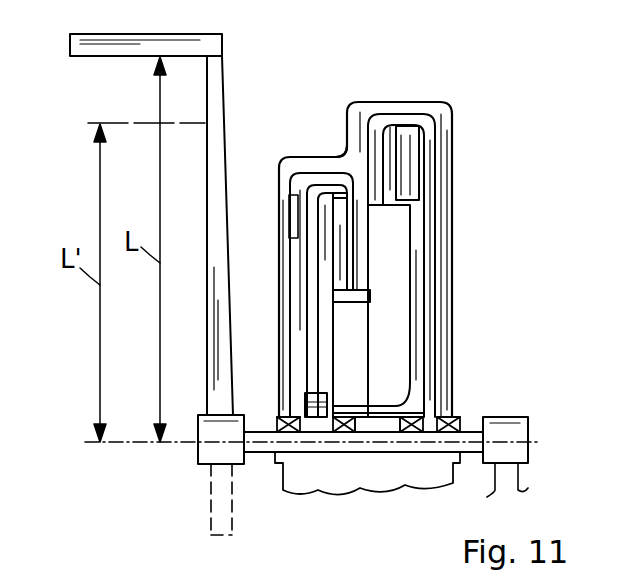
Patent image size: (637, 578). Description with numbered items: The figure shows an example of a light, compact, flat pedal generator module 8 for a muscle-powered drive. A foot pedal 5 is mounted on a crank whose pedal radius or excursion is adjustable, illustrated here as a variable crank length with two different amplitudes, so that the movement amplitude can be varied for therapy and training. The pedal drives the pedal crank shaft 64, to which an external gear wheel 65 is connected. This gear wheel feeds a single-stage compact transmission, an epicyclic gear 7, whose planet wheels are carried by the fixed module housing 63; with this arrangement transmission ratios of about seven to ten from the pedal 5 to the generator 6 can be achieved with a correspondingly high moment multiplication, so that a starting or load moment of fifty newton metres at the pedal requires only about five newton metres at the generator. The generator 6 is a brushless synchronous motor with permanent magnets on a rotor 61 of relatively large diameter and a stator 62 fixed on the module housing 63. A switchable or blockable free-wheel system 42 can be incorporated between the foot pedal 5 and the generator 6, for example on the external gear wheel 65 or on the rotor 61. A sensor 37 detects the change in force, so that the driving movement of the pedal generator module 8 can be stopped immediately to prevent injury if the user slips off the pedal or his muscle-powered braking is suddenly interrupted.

The pedal 5 is at (218, 76).
The generator 6 is at (422, 101).
The epicyclic gear 7 is at (323, 153).
The pedal generator module 8 is at (381, 279).
The sensor 37 is at (290, 223).
The free-wheel system 42 is at (318, 421).
The rotor 61 is at (405, 170).
The stator 62 is at (380, 188).
The module housing 63 is at (280, 171).
The pedal crank shaft 64 is at (363, 447).
The external gear wheel 65 is at (313, 282).